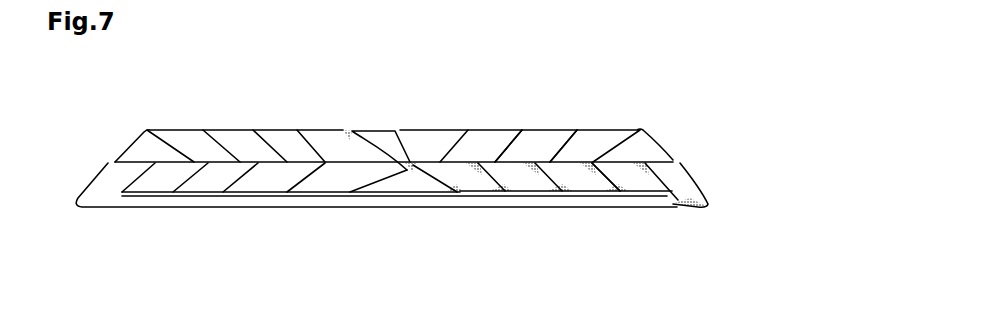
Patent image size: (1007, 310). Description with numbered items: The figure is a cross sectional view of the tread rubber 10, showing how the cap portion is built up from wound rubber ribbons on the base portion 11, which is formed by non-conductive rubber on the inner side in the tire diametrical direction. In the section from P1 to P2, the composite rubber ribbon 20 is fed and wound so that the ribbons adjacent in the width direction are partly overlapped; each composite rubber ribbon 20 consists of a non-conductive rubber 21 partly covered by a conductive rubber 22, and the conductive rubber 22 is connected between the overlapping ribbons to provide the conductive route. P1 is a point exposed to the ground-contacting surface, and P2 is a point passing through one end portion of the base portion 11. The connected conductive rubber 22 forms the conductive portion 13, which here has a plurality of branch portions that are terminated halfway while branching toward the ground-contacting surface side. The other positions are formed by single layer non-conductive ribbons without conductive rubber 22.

The tread rubber 10 is at (226, 129).
The base portion 11 is at (276, 208).
The conductive portion 13 is at (470, 195).
The composite rubber ribbon 20 is at (543, 160).
The non-conductive rubber 21 is at (563, 178).
The conductive rubber 22 is at (570, 195).
The point exposed to the ground-contacting surface P1 is at (383, 115).
The point passing through one end portion of the base portion P2 is at (695, 228).